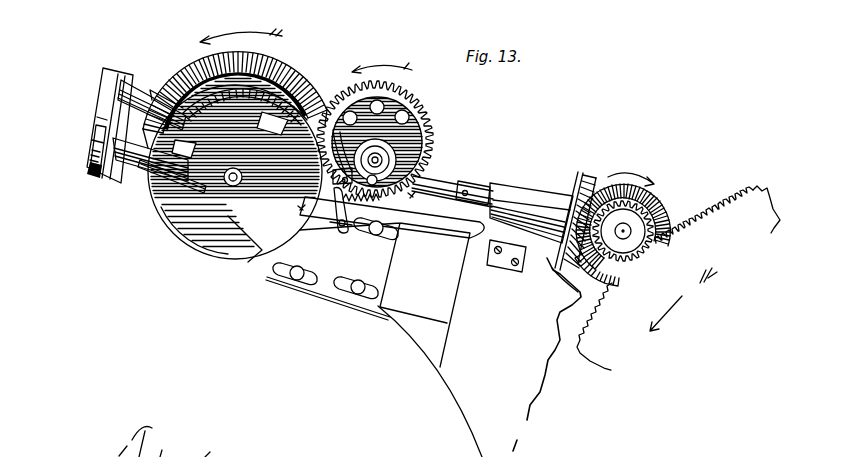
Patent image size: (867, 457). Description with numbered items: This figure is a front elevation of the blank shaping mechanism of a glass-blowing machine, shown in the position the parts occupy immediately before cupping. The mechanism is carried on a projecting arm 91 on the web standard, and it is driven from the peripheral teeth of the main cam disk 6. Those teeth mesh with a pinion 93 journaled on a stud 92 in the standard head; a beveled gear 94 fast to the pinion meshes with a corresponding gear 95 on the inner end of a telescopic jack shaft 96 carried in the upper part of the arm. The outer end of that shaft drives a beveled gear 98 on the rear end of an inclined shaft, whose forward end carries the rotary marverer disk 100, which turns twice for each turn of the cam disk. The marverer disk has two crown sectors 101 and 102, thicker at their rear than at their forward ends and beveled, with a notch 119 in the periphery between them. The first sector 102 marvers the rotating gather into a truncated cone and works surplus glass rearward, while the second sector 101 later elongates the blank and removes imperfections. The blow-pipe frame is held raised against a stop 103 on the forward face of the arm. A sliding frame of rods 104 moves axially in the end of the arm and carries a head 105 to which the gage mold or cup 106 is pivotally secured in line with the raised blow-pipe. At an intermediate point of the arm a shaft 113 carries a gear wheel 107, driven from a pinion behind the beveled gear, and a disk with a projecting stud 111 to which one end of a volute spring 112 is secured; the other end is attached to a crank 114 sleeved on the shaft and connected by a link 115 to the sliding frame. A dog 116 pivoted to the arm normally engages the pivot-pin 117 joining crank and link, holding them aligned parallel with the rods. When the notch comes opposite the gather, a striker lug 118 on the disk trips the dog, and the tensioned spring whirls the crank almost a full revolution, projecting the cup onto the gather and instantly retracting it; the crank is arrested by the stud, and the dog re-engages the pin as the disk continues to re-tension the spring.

The cam disk 6 is at (733, 228).
The projecting arm 91 is at (482, 378).
The stud 92 is at (646, 238).
The pinion 93 is at (630, 220).
The beveled gear 94 is at (600, 192).
The gear 95 is at (584, 176).
The telescopic jack shaft 96 is at (480, 183).
The beveled gear 98 is at (265, 72).
The rotary marverer disk 100 is at (235, 202).
The crown sector 101 is at (270, 116).
The crown sector 102 is at (190, 227).
The stop 103 is at (500, 256).
The rods 104 is at (145, 135).
The head 105 is at (105, 100).
The gage mold or cup 106 is at (112, 165).
The gear wheel 107 is at (385, 102).
The stud 111 is at (404, 112).
The volute spring 112 is at (298, 170).
The shaft 113 is at (376, 184).
The crank 114 is at (374, 185).
The link 115 is at (338, 212).
The dog 116 is at (353, 193).
The pivot-pin 117 is at (371, 200).
The striker lug 118 is at (322, 150).
The notch 119 is at (148, 165).